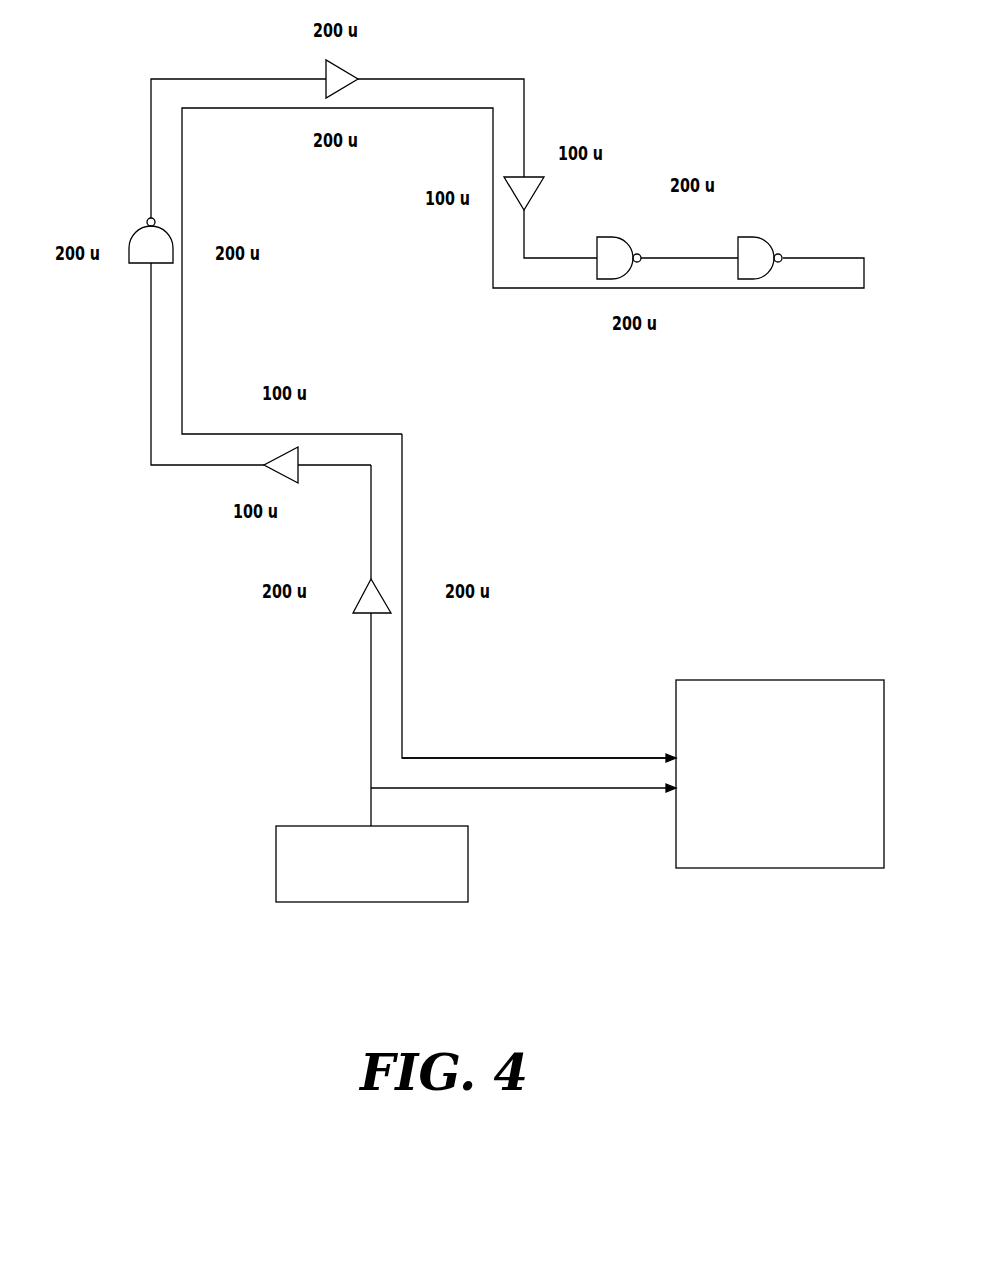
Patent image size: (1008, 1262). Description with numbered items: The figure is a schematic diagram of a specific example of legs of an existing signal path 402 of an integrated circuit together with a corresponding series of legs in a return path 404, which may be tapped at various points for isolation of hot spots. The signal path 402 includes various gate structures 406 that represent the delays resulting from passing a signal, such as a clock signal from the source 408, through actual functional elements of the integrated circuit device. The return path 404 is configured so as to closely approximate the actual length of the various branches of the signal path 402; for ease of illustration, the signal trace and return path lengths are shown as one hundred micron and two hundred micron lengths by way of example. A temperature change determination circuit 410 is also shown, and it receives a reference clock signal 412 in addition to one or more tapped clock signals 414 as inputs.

The signal path 402 is at (151, 375).
The return path 404 is at (402, 477).
The gate structures 406 is at (141, 238).
The source 408 is at (300, 833).
The temperature change determination circuit 410 is at (852, 690).
The reference clock signal 412 is at (590, 790).
The tapped clock signals 414 is at (588, 758).